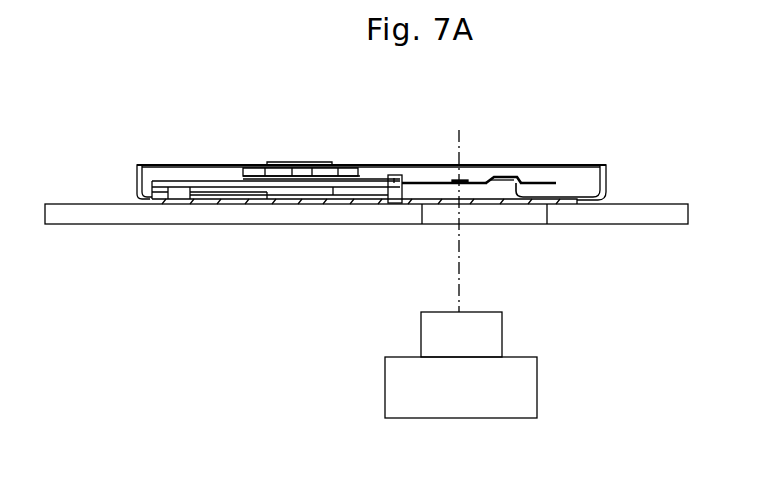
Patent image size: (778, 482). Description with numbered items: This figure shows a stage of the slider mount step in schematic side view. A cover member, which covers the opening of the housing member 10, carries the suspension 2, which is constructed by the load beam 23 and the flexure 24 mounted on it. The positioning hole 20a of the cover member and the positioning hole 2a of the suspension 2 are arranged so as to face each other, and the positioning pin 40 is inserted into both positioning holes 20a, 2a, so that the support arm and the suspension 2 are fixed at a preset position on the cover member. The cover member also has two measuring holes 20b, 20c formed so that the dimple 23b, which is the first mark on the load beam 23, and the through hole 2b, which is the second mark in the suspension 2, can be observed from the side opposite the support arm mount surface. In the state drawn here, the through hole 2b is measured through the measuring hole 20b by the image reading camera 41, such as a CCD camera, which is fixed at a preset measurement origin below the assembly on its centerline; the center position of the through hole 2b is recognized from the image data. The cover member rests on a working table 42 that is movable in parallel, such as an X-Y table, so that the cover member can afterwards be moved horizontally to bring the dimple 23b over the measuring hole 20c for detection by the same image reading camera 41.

The suspension 2 is at (597, 123).
The positioning hole 2a is at (396, 165).
The through hole 2b is at (462, 181).
The housing member 10 is at (608, 178).
The positioning hole 20a is at (396, 203).
The measuring hole 20b is at (458, 205).
The measuring hole 20c is at (513, 204).
The load beam 23 is at (555, 182).
The dimple 23b is at (549, 205).
The flexure 24 is at (520, 177).
The positioning pin 40 is at (386, 189).
The image reading camera 41 is at (385, 388).
The base plate 42 is at (225, 225).